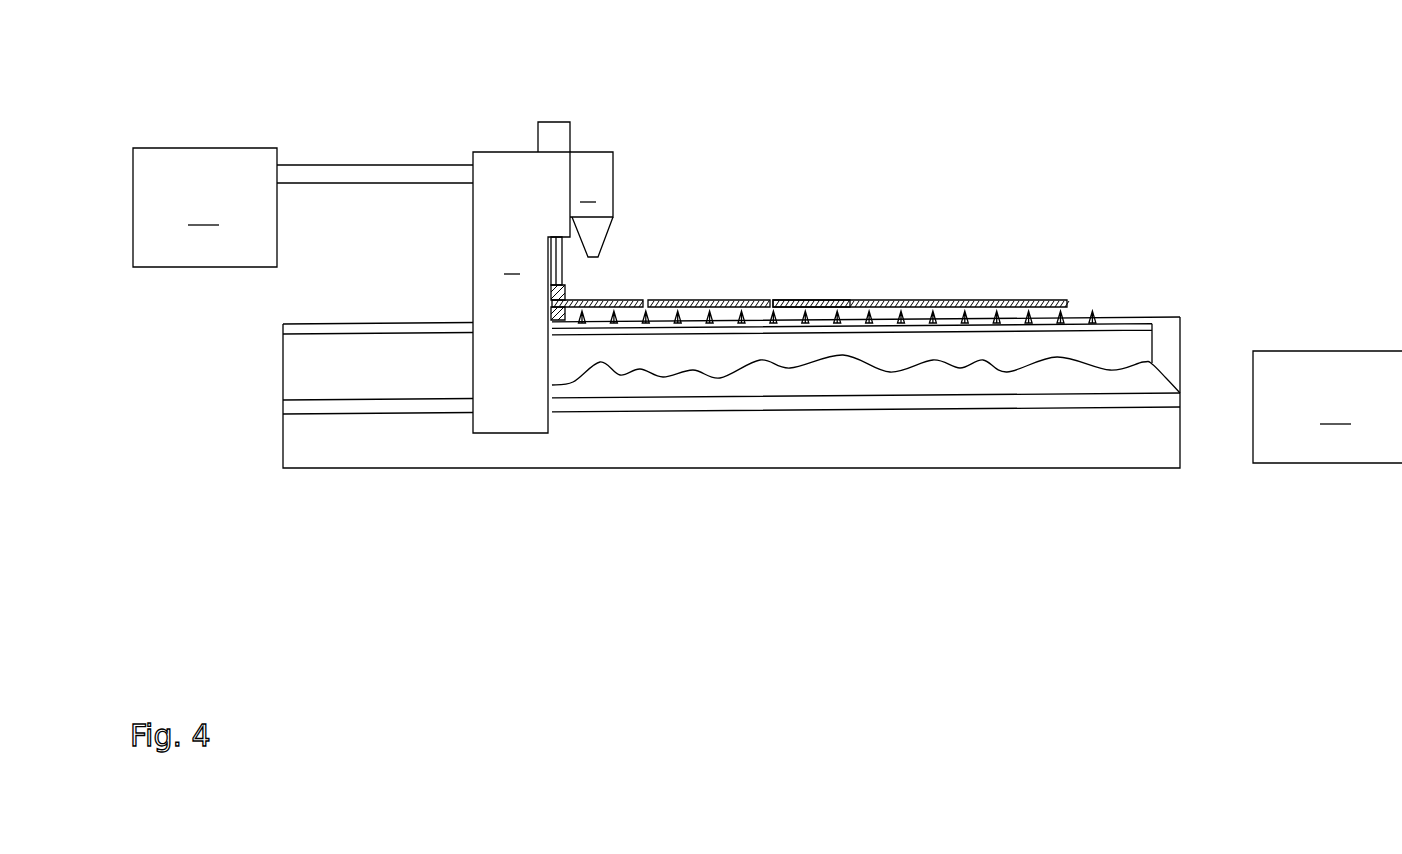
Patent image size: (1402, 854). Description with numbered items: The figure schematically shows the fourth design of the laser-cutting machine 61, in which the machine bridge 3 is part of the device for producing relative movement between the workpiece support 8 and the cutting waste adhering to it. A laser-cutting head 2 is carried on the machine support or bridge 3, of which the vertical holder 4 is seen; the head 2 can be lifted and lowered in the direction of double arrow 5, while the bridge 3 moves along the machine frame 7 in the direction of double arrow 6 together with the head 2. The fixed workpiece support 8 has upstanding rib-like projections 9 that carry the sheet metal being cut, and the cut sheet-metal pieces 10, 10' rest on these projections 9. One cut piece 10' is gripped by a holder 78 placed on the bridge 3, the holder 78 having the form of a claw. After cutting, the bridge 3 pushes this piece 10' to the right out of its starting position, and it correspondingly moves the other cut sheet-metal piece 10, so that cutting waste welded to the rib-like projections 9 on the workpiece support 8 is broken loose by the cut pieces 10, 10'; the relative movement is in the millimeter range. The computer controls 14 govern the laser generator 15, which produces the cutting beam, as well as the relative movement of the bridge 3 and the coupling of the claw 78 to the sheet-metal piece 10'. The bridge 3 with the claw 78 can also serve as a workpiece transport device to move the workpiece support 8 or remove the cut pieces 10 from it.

The laser-cutting head 2 is at (575, 189).
The machine support or bridge 3 is at (470, 278).
The vertical holder 4 is at (521, 292).
The double arrow (lifting and lowering direction) 5 is at (580, 117).
The double arrow (bridge travel direction) 6 is at (528, 115).
The machine frame 7 is at (372, 435).
The workpiece support 8 is at (1156, 340).
The rib-like projections 9 is at (1094, 311).
The cut sheet-metal piece 10 is at (810, 267).
The workpiece plate section 10' is at (816, 267).
The computer controls 14 is at (1327, 407).
The laser generator 15 is at (205, 207).
The laser-cutting machine 61 is at (415, 150).
The holder / claw 78 is at (568, 297).